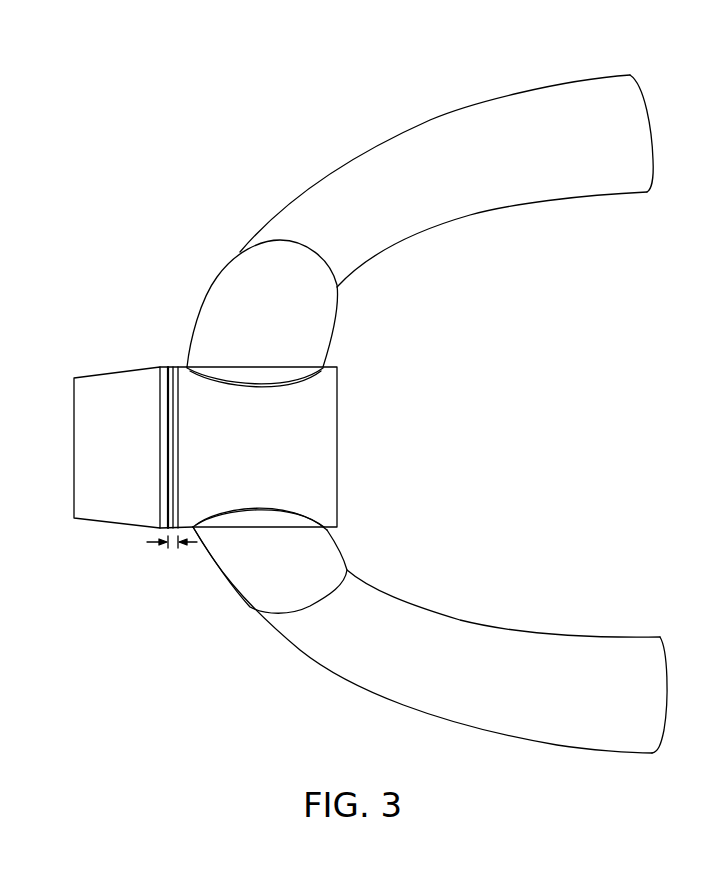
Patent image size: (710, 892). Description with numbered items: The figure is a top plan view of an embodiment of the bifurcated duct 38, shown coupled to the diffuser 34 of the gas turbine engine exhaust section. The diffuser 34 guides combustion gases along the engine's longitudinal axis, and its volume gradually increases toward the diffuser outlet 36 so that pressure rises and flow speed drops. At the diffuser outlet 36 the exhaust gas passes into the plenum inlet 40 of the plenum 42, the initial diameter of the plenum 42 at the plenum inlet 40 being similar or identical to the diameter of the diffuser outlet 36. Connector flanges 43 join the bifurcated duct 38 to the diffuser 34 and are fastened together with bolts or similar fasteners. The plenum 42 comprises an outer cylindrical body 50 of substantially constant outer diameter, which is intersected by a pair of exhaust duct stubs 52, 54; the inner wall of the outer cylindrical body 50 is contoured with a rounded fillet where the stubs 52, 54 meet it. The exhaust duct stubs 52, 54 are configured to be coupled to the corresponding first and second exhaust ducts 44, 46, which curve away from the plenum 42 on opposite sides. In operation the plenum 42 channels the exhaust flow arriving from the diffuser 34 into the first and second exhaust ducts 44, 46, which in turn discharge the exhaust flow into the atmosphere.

The diffuser 34 is at (103, 372).
The diffuser outlet 36 is at (170, 364).
The bifurcated duct 38 is at (427, 301).
The plenum inlet 40 is at (180, 364).
The plenum 42 is at (365, 293).
The connector flanges 43 is at (172, 546).
The first exhaust duct 44 is at (507, 93).
The second exhaust duct 46 is at (555, 747).
The outer cylindrical body 50 is at (338, 445).
The exhaust duct stub 52 is at (218, 280).
The exhaust duct stub 54 is at (217, 567).